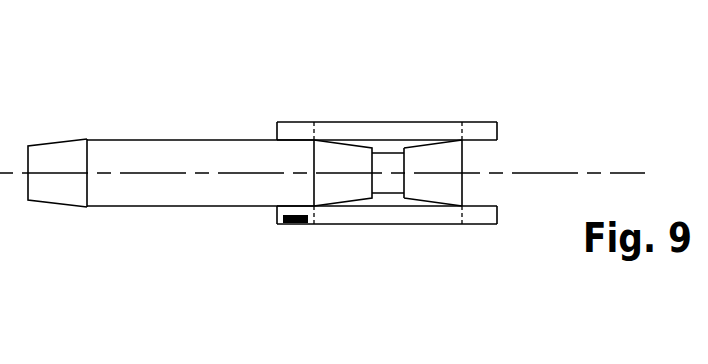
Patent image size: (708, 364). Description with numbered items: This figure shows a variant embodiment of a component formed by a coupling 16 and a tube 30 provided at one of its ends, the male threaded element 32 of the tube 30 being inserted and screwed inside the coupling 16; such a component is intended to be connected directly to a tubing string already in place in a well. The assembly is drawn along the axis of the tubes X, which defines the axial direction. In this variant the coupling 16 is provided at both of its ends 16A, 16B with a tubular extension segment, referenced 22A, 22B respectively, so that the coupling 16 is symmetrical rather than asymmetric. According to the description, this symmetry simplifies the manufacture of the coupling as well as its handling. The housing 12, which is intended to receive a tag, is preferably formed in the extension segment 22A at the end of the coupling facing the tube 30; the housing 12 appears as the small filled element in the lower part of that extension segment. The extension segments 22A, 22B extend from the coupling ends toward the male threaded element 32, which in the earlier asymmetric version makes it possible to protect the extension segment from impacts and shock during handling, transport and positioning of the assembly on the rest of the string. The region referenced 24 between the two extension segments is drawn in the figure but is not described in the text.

The housing 12 is at (292, 225).
The coupling 16 is at (437, 266).
The end of coupling 16A is at (276, 128).
The end of coupling 16B is at (499, 128).
The tubular extension segment 22A is at (305, 122).
The tubular extension segment 22B is at (477, 128).
The intermediate portion 24 is at (370, 122).
The tube 30 is at (124, 197).
The male threaded element 32 is at (54, 185).
The axis of the tubes X is at (570, 173).